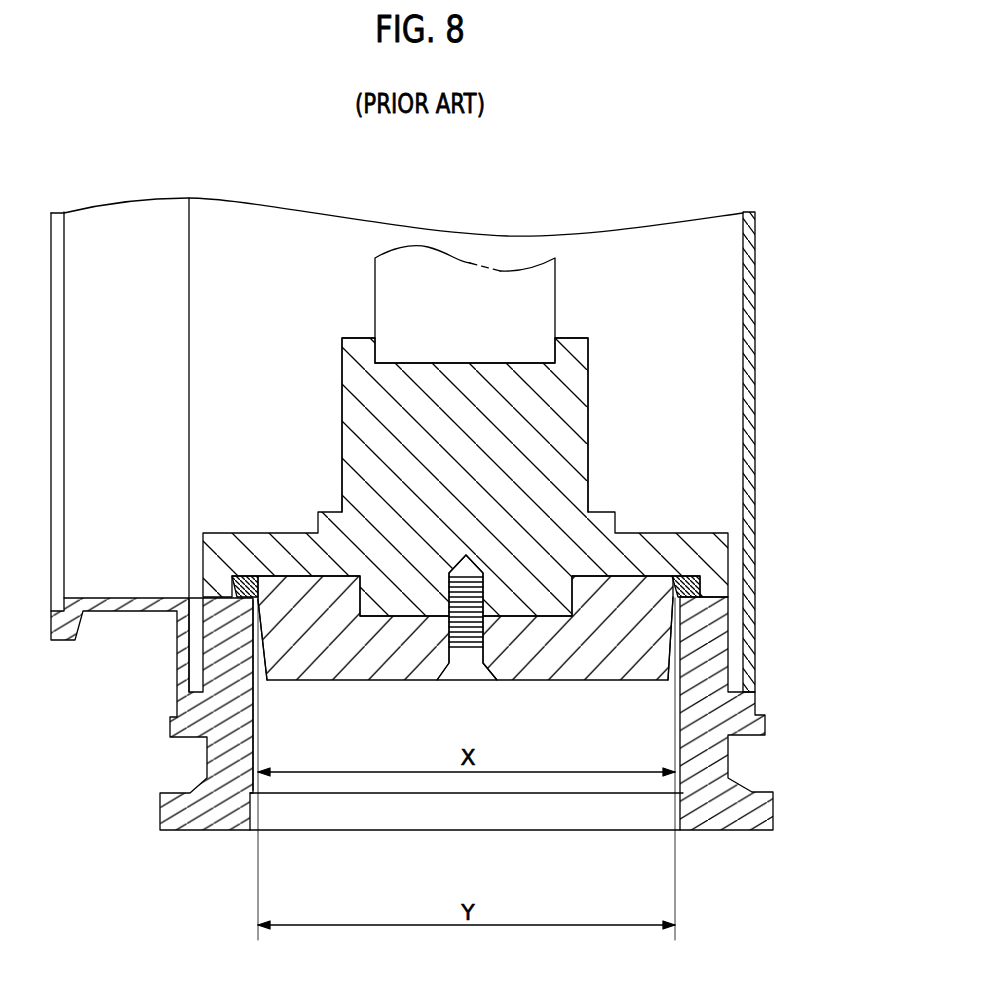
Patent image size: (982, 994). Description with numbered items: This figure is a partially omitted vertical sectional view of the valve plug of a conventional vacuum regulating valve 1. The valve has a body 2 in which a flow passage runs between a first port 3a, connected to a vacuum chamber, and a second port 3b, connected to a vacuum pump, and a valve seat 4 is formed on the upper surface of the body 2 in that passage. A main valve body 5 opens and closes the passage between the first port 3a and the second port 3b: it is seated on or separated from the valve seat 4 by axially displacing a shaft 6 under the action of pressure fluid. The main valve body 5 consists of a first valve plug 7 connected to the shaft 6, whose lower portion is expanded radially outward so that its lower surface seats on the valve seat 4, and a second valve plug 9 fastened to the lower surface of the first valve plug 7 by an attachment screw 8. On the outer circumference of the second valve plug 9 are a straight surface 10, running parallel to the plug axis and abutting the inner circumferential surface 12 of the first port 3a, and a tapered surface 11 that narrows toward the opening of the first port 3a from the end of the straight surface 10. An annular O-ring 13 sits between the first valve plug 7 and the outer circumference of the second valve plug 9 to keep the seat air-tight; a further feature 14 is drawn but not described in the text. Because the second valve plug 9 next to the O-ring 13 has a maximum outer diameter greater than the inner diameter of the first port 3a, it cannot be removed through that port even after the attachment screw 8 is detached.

The vacuum regulating valve 1 is at (626, 195).
The body 2 is at (752, 704).
The first port 3a is at (449, 822).
The second port 3b is at (103, 528).
The valve seat 4 is at (236, 592).
The main valve body 5 is at (597, 510).
The shaft 6 is at (545, 298).
The first valve plug 7 is at (571, 399).
The attachment screw 8 is at (470, 668).
The second valve plug 9 is at (578, 668).
The straight surface 10 is at (685, 624).
The tapered surface 11 is at (677, 683).
The inner circumferential surface 12 is at (262, 742).
The O-ring 13 is at (702, 584).
The gap 14 is at (257, 633).